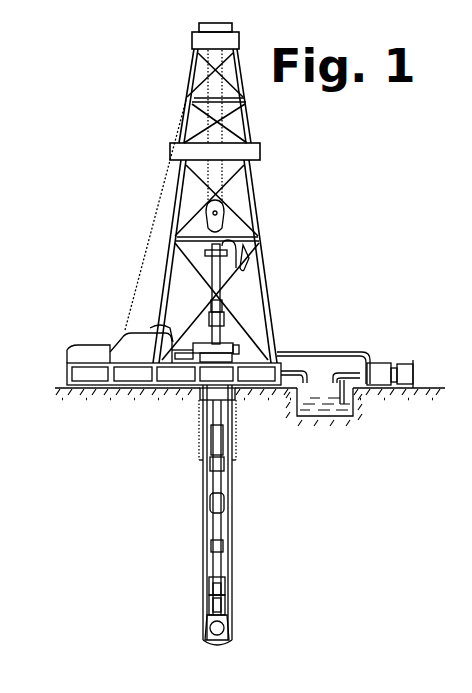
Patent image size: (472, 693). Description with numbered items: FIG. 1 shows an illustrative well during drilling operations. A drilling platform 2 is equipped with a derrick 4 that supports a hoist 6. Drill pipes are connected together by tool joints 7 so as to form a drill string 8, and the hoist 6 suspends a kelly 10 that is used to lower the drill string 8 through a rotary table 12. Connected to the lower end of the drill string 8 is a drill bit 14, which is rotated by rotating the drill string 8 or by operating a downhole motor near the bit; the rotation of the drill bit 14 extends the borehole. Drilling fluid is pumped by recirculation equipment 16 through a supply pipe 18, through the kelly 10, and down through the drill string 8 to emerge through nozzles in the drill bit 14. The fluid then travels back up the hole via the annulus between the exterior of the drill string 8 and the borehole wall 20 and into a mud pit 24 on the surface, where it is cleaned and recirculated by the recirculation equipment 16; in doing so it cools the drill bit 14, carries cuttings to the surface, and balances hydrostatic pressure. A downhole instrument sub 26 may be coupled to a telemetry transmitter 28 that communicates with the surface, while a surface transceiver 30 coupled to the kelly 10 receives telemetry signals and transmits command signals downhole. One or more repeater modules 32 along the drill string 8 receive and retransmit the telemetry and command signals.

The drilling platform 2 is at (68, 371).
The derrick 4 is at (255, 116).
The hoist 6 is at (228, 222).
The tool joints 7 is at (210, 463).
The drill string 8 is at (222, 490).
The kelly 10 is at (220, 266).
The rotary table 12 is at (232, 341).
The drill bit 14 is at (230, 632).
The recirculation equipment 16 is at (384, 365).
The supply pipe 18 is at (330, 352).
The borehole wall 20 is at (233, 490).
The mud pit 24 is at (306, 410).
The downhole instrument sub 26 is at (212, 604).
The telemetry transmitter 28 is at (212, 583).
The surface transceiver 30 is at (217, 309).
The repeater modules 32 is at (210, 504).